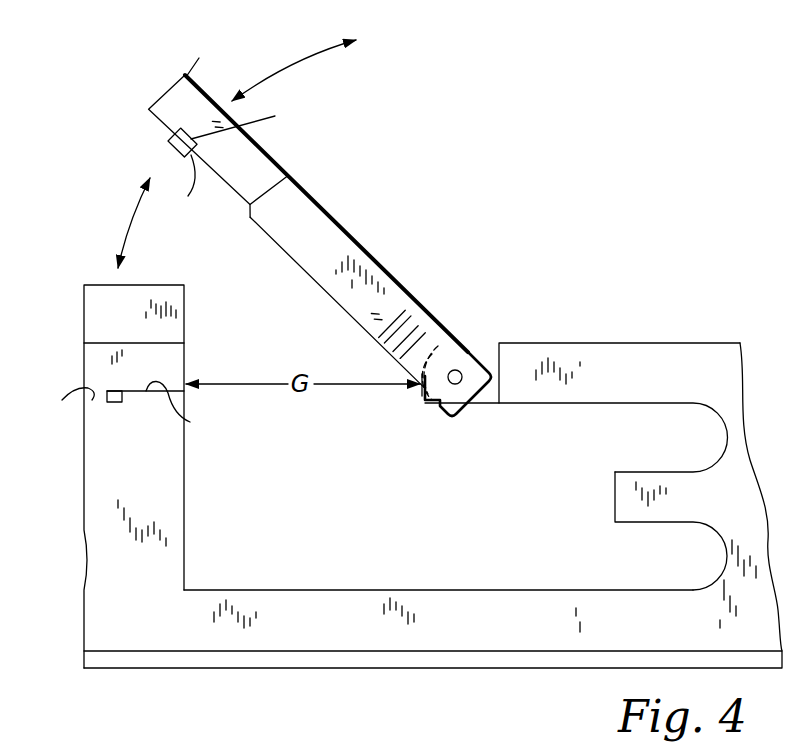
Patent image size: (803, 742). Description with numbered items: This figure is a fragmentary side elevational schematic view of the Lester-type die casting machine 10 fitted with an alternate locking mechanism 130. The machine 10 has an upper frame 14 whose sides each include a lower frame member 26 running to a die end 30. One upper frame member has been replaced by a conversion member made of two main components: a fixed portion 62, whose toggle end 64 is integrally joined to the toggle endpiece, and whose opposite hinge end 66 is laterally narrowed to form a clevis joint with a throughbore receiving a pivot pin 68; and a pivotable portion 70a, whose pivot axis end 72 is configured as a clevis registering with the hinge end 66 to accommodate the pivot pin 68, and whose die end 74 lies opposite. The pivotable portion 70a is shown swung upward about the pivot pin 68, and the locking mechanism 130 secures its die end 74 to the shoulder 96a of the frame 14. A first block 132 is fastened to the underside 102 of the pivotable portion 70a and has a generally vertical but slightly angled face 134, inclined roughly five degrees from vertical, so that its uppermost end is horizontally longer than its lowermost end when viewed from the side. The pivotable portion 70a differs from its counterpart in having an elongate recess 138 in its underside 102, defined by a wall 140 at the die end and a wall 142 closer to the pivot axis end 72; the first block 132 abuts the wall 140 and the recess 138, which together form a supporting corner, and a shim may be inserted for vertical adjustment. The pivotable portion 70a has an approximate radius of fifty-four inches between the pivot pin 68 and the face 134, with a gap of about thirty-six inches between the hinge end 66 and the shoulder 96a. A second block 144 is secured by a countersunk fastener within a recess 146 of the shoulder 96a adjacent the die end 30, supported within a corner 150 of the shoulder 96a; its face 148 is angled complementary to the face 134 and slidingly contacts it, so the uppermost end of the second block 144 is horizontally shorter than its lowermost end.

The machine 10 is at (628, 250).
The upper frame 14 is at (436, 598).
The lower frame member 26 is at (655, 598).
The die end 30 is at (108, 563).
The fixed portion 62 is at (653, 354).
The toggle end 64 is at (732, 362).
The hinge end 66 is at (490, 398).
The pivot pin 68 is at (452, 384).
The pivot axis end 72 is at (470, 353).
The die end 74 is at (195, 54).
The pivotable portion 70a is at (318, 240).
The underside 102 is at (309, 277).
The locking mechanism 130 is at (143, 155).
The first block 132 is at (255, 120).
The angled face 134 is at (178, 188).
The elongate recess 138 is at (248, 201).
The wall 140 is at (177, 138).
The wall 142 is at (257, 218).
The second block 144 is at (118, 391).
The recess 146 is at (53, 402).
The face 148 is at (100, 401).
The corner 150 is at (122, 402).
The shoulder 96a is at (190, 422).